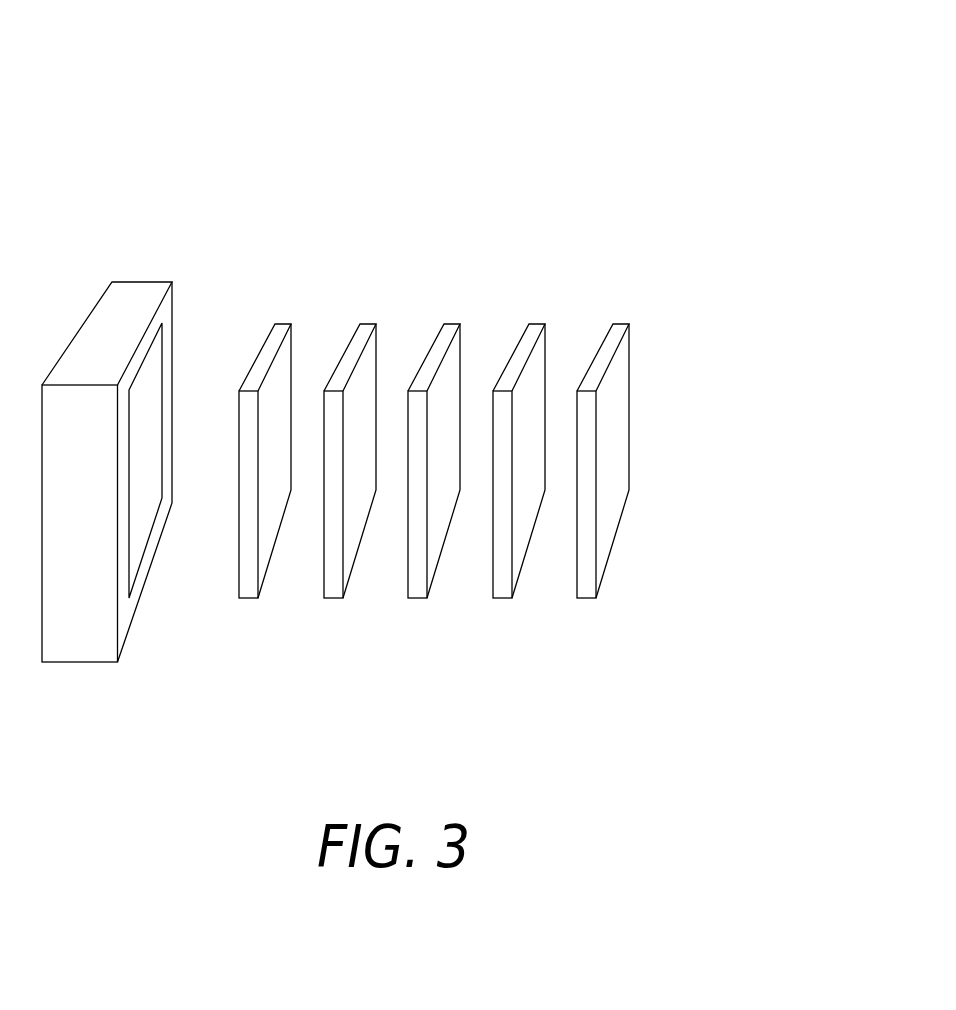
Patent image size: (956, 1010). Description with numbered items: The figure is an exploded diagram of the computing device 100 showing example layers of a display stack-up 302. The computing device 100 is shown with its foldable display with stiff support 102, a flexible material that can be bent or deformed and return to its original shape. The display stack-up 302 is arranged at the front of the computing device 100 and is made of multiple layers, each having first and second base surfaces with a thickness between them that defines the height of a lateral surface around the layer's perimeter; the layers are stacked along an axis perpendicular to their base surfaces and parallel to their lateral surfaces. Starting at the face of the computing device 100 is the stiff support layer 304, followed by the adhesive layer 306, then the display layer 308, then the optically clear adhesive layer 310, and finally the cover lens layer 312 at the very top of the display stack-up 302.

The computing device 100 is at (135, 291).
The foldable display with stiff support 102 is at (161, 362).
The display stack-up 302 is at (545, 375).
The stiff support layer 304 is at (283, 323).
The adhesive layer 306 is at (367, 323).
The display layer 308 is at (451, 323).
The optically clear adhesive layer 310 is at (536, 323).
The cover lens layer 312 is at (620, 323).